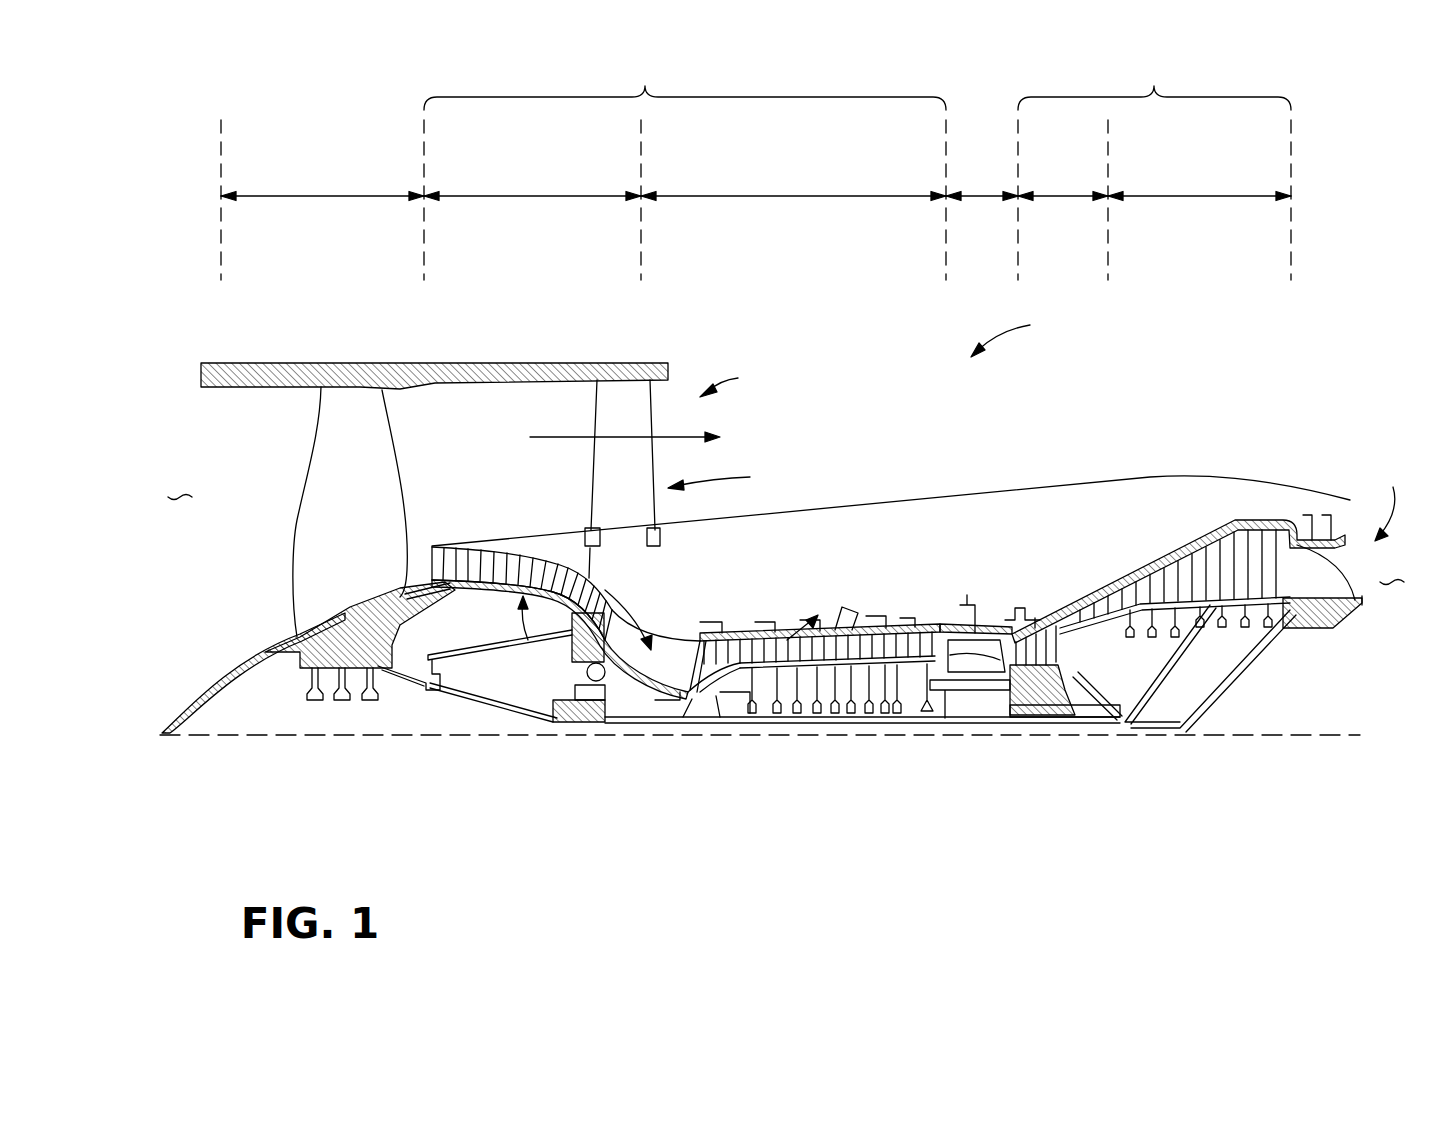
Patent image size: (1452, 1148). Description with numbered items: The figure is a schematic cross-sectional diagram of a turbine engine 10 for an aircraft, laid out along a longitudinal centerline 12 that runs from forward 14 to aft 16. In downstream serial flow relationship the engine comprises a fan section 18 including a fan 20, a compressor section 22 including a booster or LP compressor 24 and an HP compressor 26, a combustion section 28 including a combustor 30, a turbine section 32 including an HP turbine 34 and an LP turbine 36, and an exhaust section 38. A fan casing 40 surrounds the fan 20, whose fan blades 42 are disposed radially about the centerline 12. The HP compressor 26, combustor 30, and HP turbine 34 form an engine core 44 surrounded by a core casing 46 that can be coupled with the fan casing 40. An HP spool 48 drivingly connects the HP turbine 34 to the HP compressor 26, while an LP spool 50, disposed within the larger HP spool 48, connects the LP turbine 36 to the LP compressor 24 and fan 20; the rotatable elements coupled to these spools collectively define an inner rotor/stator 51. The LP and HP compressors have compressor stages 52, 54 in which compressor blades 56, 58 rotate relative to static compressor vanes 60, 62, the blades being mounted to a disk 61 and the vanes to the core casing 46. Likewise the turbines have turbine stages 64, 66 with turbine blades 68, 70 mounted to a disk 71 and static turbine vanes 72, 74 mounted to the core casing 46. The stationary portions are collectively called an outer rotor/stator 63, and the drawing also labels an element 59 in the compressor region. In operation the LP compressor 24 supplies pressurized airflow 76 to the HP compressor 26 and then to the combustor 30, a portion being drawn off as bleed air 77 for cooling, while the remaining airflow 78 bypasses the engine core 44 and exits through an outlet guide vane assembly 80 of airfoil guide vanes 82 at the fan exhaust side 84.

The turbine engine 10 is at (1018, 330).
The centerline 12 is at (326, 737).
The forward 14 is at (180, 486).
The aft 16 is at (1392, 571).
The fan section 18 is at (322, 187).
The fan 20 is at (256, 576).
The compressor section 22 is at (685, 85).
The low pressure (LP) compressor 24 is at (532, 187).
The high pressure (HP) compressor 26 is at (793, 187).
The combustion section 28 is at (982, 180).
The combustor 30 is at (955, 655).
The turbine section 32 is at (1154, 85).
The HP turbine 34 is at (1063, 185).
The LP turbine 36 is at (1199, 185).
The exhaust section 38 is at (1392, 499).
The fan casing 40 is at (342, 362).
The fan blades 42 is at (378, 443).
The engine core 44 is at (928, 535).
The core casing 46 is at (1245, 520).
The HP spool 48 is at (962, 693).
The LP spool 50 is at (576, 722).
The inner rotor/stator 51 is at (526, 640).
The compressor stages 52 is at (513, 545).
The compressor stages 54 is at (700, 548).
The compressor blades 56 is at (415, 493).
The compressor blades 58 is at (714, 696).
The inner casing 59 is at (479, 587).
The static compressor vanes 60 is at (440, 548).
The disk 61 is at (716, 700).
The static compressor vanes 62 is at (696, 688).
The outer rotor/stator 63 is at (690, 700).
The turbine stages 64 is at (1044, 613).
The turbine stages 66 is at (1178, 560).
The turbine blades 68 is at (1028, 630).
The turbine blades 70 is at (1130, 580).
The disk 71 is at (1036, 690).
The static turbine vanes 72 is at (1022, 588).
The static turbine vanes 74 is at (1125, 590).
The pressurized airflow 76 is at (660, 600).
The bleed air 77 is at (787, 640).
The airflow 78 is at (553, 434).
The outlet guide vane assembly 80 is at (724, 477).
The airfoil guide vanes 82 is at (597, 476).
The fan exhaust side 84 is at (735, 381).